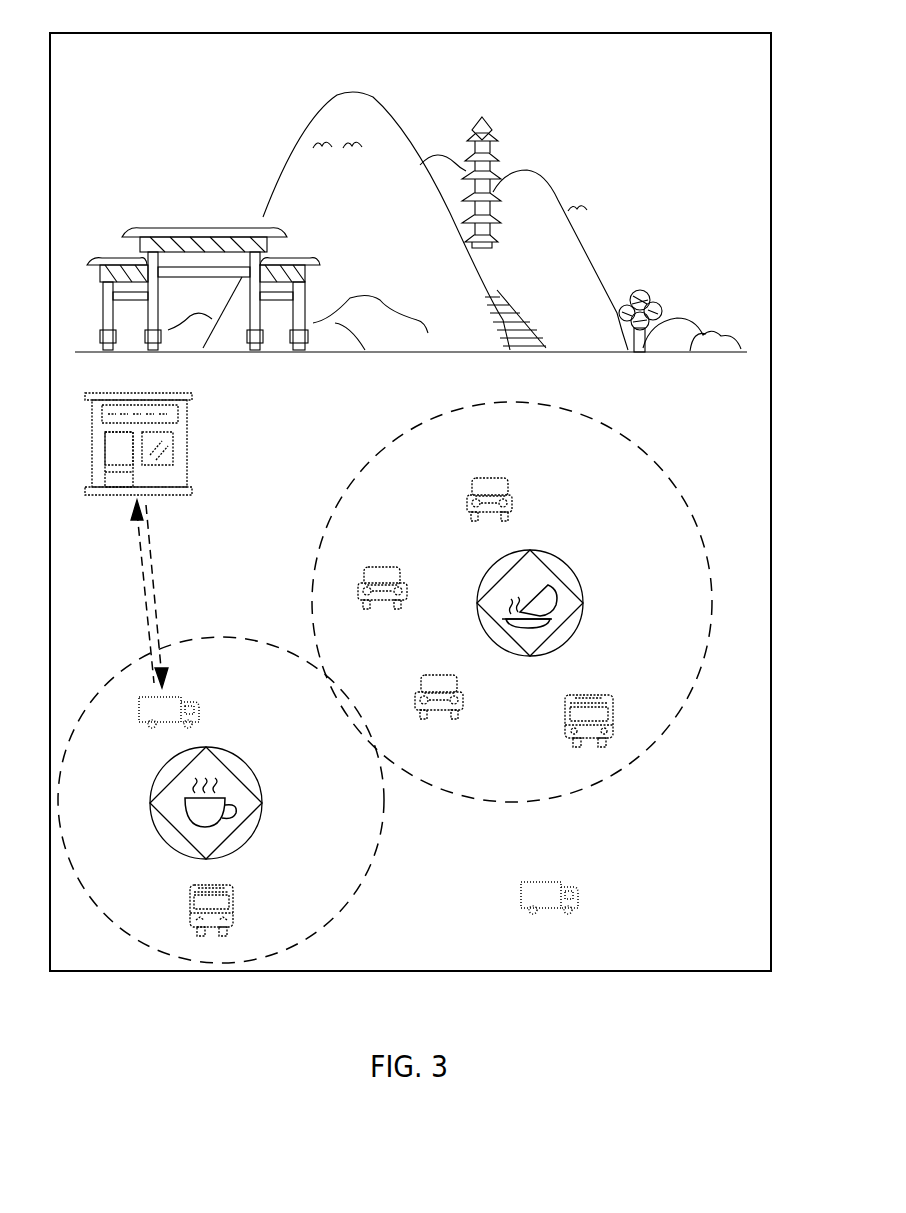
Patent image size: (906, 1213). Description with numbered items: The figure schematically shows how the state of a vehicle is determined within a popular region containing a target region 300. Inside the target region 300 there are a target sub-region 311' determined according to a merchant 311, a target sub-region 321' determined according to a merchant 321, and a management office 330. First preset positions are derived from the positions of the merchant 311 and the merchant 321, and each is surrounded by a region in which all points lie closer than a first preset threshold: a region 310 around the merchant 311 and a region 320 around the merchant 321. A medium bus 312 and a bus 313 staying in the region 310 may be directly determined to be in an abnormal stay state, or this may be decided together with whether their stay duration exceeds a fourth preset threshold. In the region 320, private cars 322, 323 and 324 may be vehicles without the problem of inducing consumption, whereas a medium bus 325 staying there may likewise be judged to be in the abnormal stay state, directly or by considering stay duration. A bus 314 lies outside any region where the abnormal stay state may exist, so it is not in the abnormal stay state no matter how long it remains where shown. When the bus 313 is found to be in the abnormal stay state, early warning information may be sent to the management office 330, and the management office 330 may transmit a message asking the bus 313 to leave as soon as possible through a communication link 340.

The target region 300 is at (510, 33).
The region 310 is at (218, 633).
The merchant 311 is at (254, 792).
The target sub-region 311' is at (233, 792).
The medium bus 312 is at (213, 878).
The bus 313 is at (198, 697).
The bus 314 is at (560, 868).
The region 320 is at (617, 433).
The merchant 321 is at (575, 590).
The target sub-region 321' is at (547, 589).
The private car 322 is at (485, 478).
The private car 323 is at (380, 567).
The private car 324 is at (437, 677).
The medium bus 325 is at (592, 695).
The management office 330 is at (188, 433).
The communication link 340 is at (158, 570).